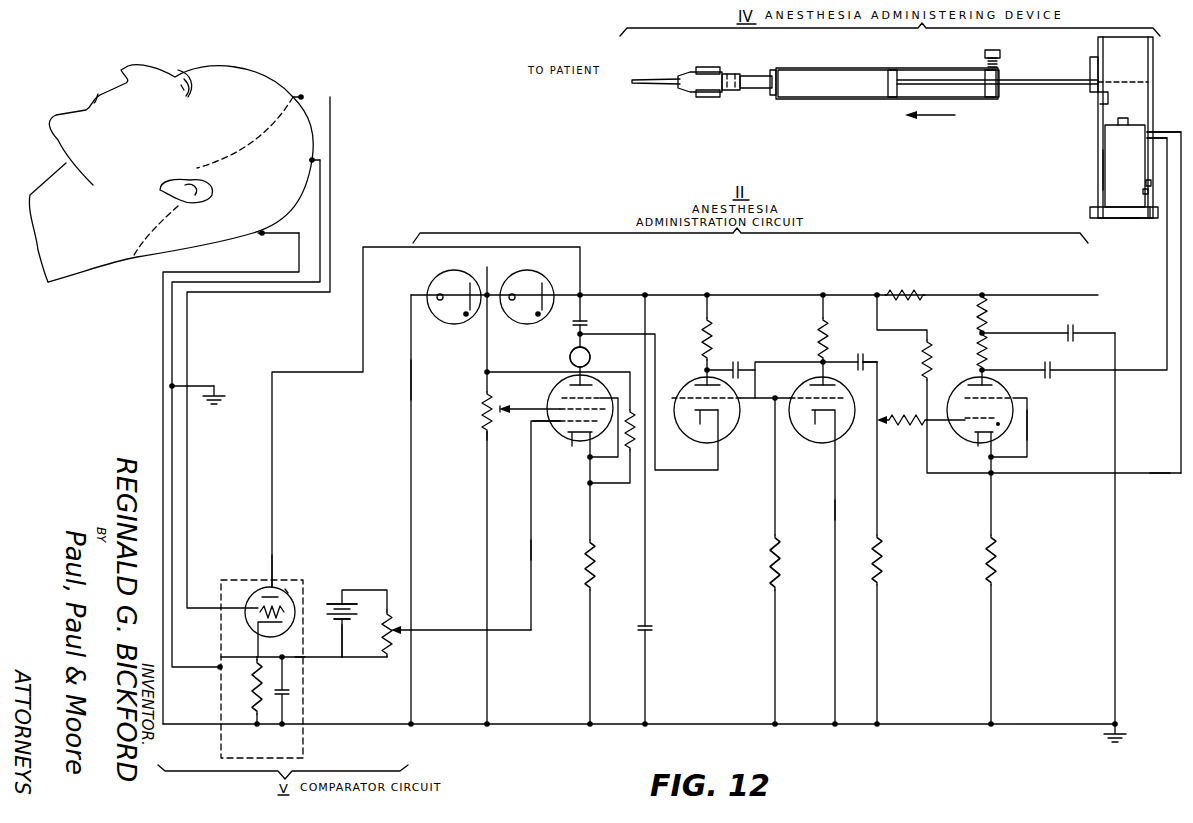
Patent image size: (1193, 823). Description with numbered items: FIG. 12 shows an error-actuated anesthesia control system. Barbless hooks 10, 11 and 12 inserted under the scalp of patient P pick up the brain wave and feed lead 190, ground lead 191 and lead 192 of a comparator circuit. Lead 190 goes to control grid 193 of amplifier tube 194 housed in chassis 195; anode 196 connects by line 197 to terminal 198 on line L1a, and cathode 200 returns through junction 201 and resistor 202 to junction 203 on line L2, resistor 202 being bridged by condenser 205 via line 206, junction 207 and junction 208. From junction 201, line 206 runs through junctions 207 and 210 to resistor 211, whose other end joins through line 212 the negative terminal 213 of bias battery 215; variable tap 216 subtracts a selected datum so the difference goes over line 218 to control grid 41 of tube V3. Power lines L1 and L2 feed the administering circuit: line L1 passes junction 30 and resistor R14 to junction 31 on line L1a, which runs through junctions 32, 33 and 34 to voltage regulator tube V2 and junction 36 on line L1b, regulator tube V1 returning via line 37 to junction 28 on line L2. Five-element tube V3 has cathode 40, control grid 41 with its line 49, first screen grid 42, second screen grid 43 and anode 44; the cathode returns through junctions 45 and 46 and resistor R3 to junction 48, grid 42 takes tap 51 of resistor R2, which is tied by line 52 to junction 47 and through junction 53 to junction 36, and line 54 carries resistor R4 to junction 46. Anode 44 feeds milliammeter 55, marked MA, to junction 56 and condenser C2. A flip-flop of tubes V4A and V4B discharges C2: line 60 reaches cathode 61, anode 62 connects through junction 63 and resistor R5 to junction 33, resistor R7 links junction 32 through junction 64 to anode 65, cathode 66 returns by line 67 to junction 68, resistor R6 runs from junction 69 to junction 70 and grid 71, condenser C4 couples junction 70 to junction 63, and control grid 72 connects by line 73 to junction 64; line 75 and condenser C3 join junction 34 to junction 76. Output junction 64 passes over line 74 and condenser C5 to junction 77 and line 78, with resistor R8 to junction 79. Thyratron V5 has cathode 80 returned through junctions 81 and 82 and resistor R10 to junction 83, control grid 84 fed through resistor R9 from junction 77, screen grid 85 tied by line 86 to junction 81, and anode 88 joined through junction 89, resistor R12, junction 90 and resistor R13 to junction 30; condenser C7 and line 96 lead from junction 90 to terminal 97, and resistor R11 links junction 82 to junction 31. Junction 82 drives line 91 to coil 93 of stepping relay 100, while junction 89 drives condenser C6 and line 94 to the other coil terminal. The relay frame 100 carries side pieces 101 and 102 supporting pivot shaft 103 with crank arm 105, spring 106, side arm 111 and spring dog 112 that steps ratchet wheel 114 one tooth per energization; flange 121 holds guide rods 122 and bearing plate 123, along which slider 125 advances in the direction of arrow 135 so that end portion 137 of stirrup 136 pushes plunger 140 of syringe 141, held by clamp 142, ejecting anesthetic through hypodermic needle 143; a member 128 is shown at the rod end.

The patient P is at (251, 75).
The barbless hook 10 is at (296, 95).
The barbless hook 11 is at (260, 236).
The barbless hook 12 is at (310, 165).
The junction 28 is at (411, 727).
The junction 30 is at (983, 293).
The junction 31 is at (876, 293).
The junction 32 is at (823, 293).
The junction 33 is at (708, 293).
The junction 34 is at (646, 293).
The junction 36 is at (490, 300).
The line 37 is at (412, 381).
The heated cathode 40 is at (588, 458).
The control grid 41 is at (569, 423).
The first screen grid 42 is at (560, 408).
The second screen grid 43 is at (565, 397).
The anode 44 is at (590, 383).
The junction 45 is at (590, 470).
The junction 46 is at (588, 485).
The junction 47 is at (486, 727).
The junction 48 is at (590, 727).
The line 49 is at (533, 548).
The variable tap 51 is at (503, 413).
The line 52 is at (487, 505).
The junction 53 is at (486, 371).
The line 54 is at (500, 371).
The milliammeter 55 is at (590, 356).
The junction 56 is at (578, 334).
The line 60 is at (655, 350).
The cathode 61 is at (703, 423).
The anode 62 is at (695, 384).
The junction 63 is at (705, 369).
The junction 64 is at (820, 361).
The anode 65 is at (812, 384).
The cathode 66 is at (820, 567).
The line 67 is at (836, 531).
The junction 68 is at (836, 722).
The junction 69 is at (776, 722).
The junction 70 is at (773, 400).
The grid 71 is at (835, 400).
The control grid 72 is at (685, 398).
The line 73 is at (764, 361).
The line 74 is at (866, 364).
The line 75 is at (647, 323).
The junction 76 is at (647, 722).
The junction 77 is at (882, 418).
The line 78 is at (878, 513).
The junction 79 is at (879, 722).
The cathode 80 is at (972, 445).
The junction 81 is at (993, 458).
The junction 82 is at (993, 476).
The junction 83 is at (992, 722).
The control grid 84 is at (982, 414).
The screen grid 85 is at (1000, 397).
The line 86 is at (1029, 425).
The anode 88 is at (980, 372).
The junction 89 is at (985, 370).
The junction 90 is at (980, 333).
The line 91 is at (1150, 476).
The coil 93 is at (1147, 137).
The line 94 is at (1180, 286).
The line 96 is at (1116, 586).
The terminal 97 is at (1113, 722).
The stepping relay 100 is at (1153, 74).
The side piece 101 is at (1151, 220).
The side piece 102 is at (1090, 212).
The pivot shaft 103 is at (1131, 220).
The crank arm 105 is at (1142, 192).
The spring 106 is at (1146, 182).
The side arm 111 is at (1102, 170).
The spring dog 112 is at (1097, 100).
The ratchet wheel 114 is at (1150, 82).
The flange 121 is at (1092, 60).
The guide rods 122 is at (1050, 79).
The bearing plate 123 is at (896, 70).
The block member 125 is at (999, 96).
The knob 128 is at (998, 50).
The arrow 135 is at (944, 118).
The stirrup 136 is at (848, 68).
The end portion 137 is at (773, 69).
The plunger 140 is at (760, 90).
The syringe 141 is at (731, 74).
The clamp 142 is at (705, 67).
The hypodermic needle 143 is at (646, 78).
The lead 190 is at (189, 357).
The ground lead 191 is at (174, 346).
The lead 192 is at (163, 333).
The control grid 193 is at (258, 592).
The amplifier tube 194 is at (283, 594).
The chassis 195 is at (305, 589).
The anode 196 is at (274, 570).
The line 197 is at (273, 448).
The terminal 198 is at (582, 293).
The indirectly heated cathode 200 is at (258, 630).
The junction 201 is at (222, 657).
The resistor 202 is at (253, 690).
The junction 203 is at (255, 727).
The condenser 205 is at (290, 692).
The line 206 is at (305, 660).
The junction 207 is at (284, 656).
The junction 208 is at (284, 727).
The junction 210 is at (344, 660).
The resistor 211 is at (389, 662).
The line 212 is at (380, 590).
The negative terminal 213 is at (344, 601).
The bias battery 215 is at (344, 622).
The variable tap 216 is at (399, 628).
The line 218 is at (447, 645).
The resistor R2 is at (486, 410).
The resistor R3 is at (595, 561).
The resistor R4 is at (635, 455).
The resistor R5 is at (712, 341).
The resistor R6 is at (782, 566).
The resistor R7 is at (830, 341).
The resistor R8 is at (884, 561).
The resistor R9 is at (926, 429).
The resistor R10 is at (996, 556).
The resistor R11 is at (932, 361).
The resistor R12 is at (988, 356).
The resistor R13 is at (987, 319).
The resistor R14 is at (905, 281).
The condenser C2 is at (585, 324).
The condenser C3 is at (648, 631).
The condenser C4 is at (731, 368).
The condenser C5 is at (859, 360).
The condenser C6 is at (1055, 366).
The condenser C7 is at (1075, 330).
The voltage regulator tube V1 is at (437, 281).
The voltage regulator tube V2 is at (545, 282).
The five element tube V3 is at (552, 436).
The thermionic tube V4A is at (683, 436).
The thermionic tube V4B is at (800, 437).
The thyratron tube V5 is at (955, 437).
The power input line L1 is at (1040, 294).
The line L1a is at (748, 294).
The line L1b is at (476, 311).
The power input line L2 is at (368, 727).
The milliammeter MA is at (570, 357).